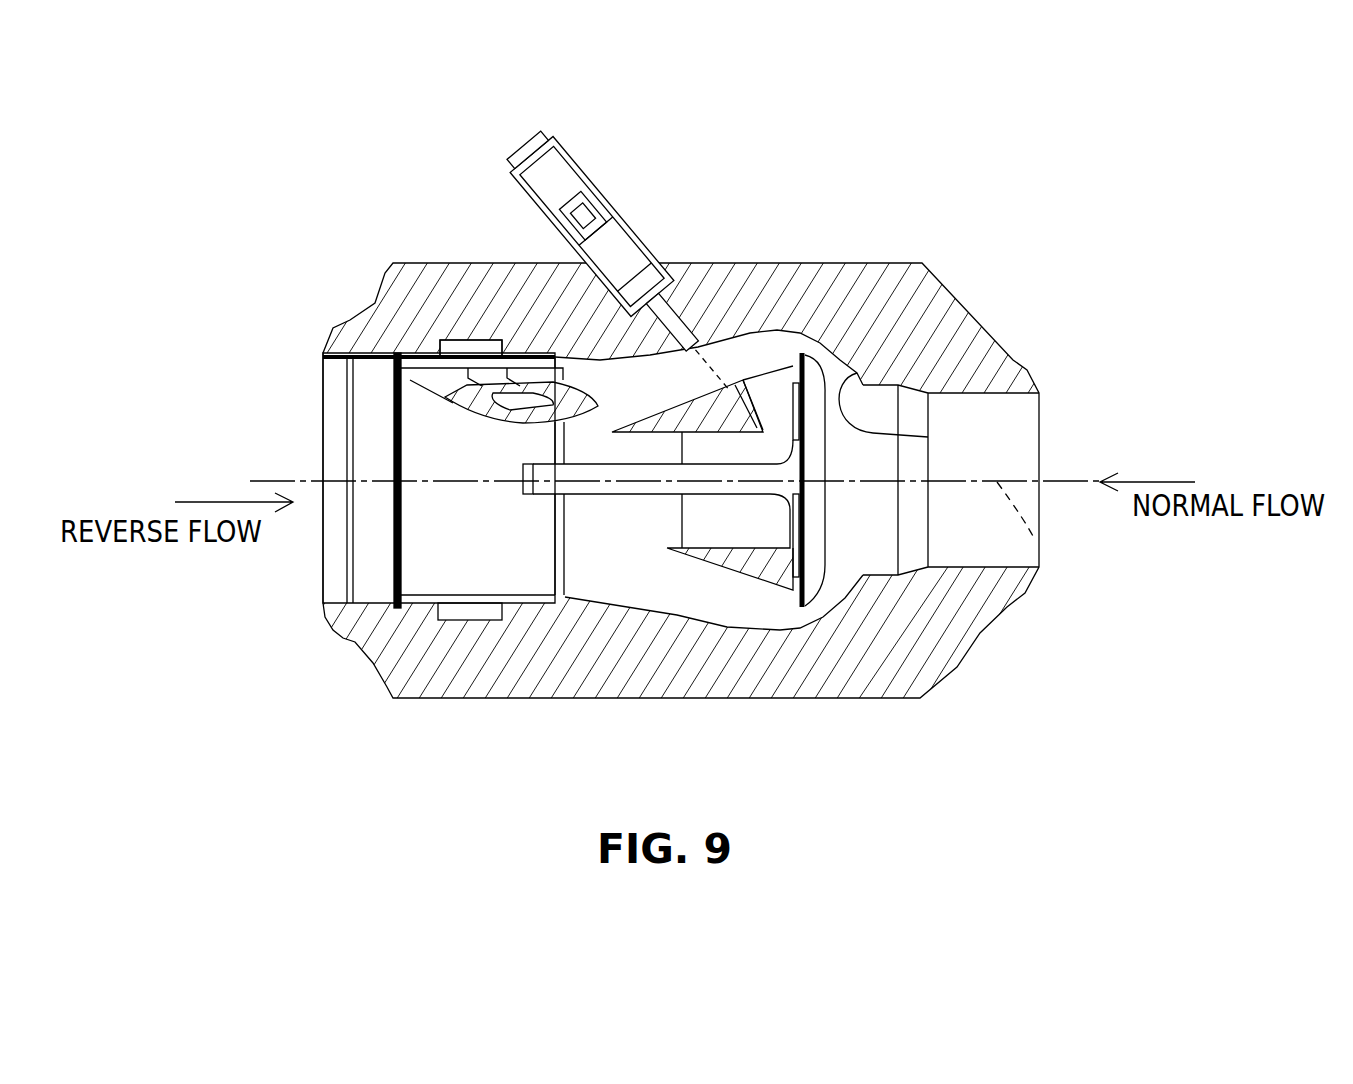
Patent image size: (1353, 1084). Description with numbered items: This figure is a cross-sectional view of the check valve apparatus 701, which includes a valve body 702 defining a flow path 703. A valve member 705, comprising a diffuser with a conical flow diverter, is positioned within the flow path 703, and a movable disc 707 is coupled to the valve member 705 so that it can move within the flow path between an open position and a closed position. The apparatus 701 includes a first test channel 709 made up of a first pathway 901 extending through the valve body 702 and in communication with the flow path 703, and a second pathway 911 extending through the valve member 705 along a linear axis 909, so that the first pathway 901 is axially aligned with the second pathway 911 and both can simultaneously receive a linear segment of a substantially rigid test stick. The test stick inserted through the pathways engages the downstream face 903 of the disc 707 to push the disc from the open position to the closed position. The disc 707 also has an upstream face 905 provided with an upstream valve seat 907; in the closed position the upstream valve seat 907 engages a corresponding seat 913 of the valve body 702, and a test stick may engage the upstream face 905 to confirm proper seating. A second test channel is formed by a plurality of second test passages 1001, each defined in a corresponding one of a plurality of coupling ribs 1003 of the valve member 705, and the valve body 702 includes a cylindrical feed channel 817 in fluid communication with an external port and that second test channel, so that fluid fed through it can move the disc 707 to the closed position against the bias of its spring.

The check valve apparatus 701 is at (996, 190).
The valve body 702 is at (987, 330).
The flow path 703 is at (1040, 543).
The valve member 705 is at (652, 410).
The movable disc 707 is at (828, 590).
The first test channel 709 is at (637, 183).
The cylindrical feed channel 817 is at (472, 612).
The first pathway 901 is at (680, 338).
The downstream face 903 is at (793, 543).
The upstream face 905 is at (825, 530).
The upstream valve seat 907 is at (810, 600).
The linear axis 909 is at (752, 350).
The second pathway 911 is at (758, 402).
The seat 913 is at (925, 437).
The second test passages 1001 is at (517, 400).
The coupling ribs 1003 is at (453, 407).